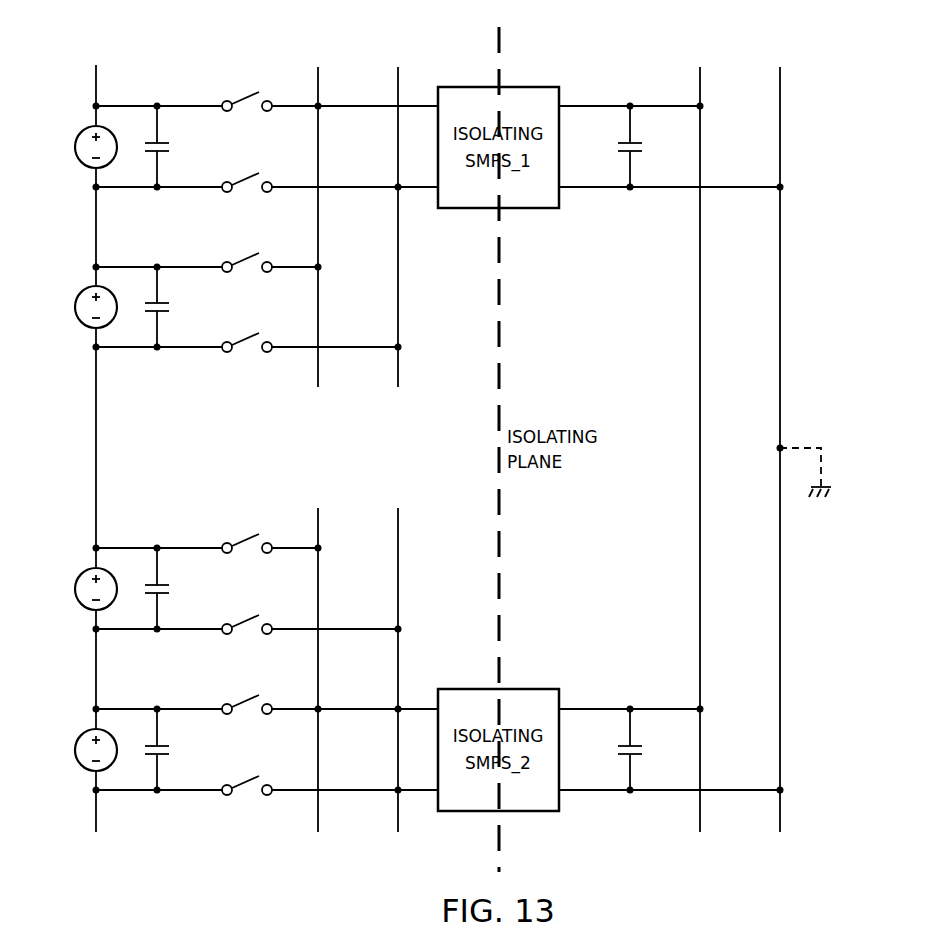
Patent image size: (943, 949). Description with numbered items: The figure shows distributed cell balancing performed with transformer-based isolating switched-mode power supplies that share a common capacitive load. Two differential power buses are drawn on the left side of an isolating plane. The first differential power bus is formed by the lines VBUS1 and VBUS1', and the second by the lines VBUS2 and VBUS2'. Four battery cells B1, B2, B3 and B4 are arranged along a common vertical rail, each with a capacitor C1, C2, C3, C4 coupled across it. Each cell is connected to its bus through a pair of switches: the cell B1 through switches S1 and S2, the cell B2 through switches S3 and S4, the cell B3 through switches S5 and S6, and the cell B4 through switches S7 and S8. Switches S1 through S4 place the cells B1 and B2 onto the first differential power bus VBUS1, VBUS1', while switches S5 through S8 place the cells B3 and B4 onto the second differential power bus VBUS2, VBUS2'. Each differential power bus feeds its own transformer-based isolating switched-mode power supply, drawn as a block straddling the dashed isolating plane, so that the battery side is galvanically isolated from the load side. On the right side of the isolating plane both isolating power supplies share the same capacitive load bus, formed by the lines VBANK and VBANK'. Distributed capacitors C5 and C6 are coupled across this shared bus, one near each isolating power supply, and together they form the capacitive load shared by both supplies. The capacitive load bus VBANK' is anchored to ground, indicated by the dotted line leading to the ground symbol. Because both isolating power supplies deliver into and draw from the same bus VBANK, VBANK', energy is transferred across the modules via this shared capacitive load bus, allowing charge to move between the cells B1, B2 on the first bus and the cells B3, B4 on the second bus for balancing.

The battery cell B1 is at (81, 147).
The battery cell B2 is at (81, 307).
The battery cell B3 is at (81, 589).
The battery cell B4 is at (81, 750).
The cell capacitor C1 is at (172, 146).
The cell capacitor C2 is at (172, 307).
The cell capacitor C3 is at (172, 588).
The cell capacitor C4 is at (172, 749).
The distributed capacitor C5 is at (644, 146).
The distributed capacitor C6 is at (644, 749).
The switch S1 is at (247, 119).
The switch S2 is at (247, 200).
The switch S3 is at (247, 280).
The switch S4 is at (247, 360).
The switch S5 is at (247, 561).
The switch S6 is at (247, 642).
The switch S7 is at (247, 722).
The switch S8 is at (247, 803).
The first differential power bus line VBUS1 is at (314, 207).
The first differential power bus return line VBUS1' is at (393, 207).
The second differential power bus line VBUS2 is at (314, 689).
The second differential power bus return line VBUS2' is at (393, 689).
The capacitive load bus VBANK is at (696, 430).
The capacitive load bus return VBANK' is at (776, 430).